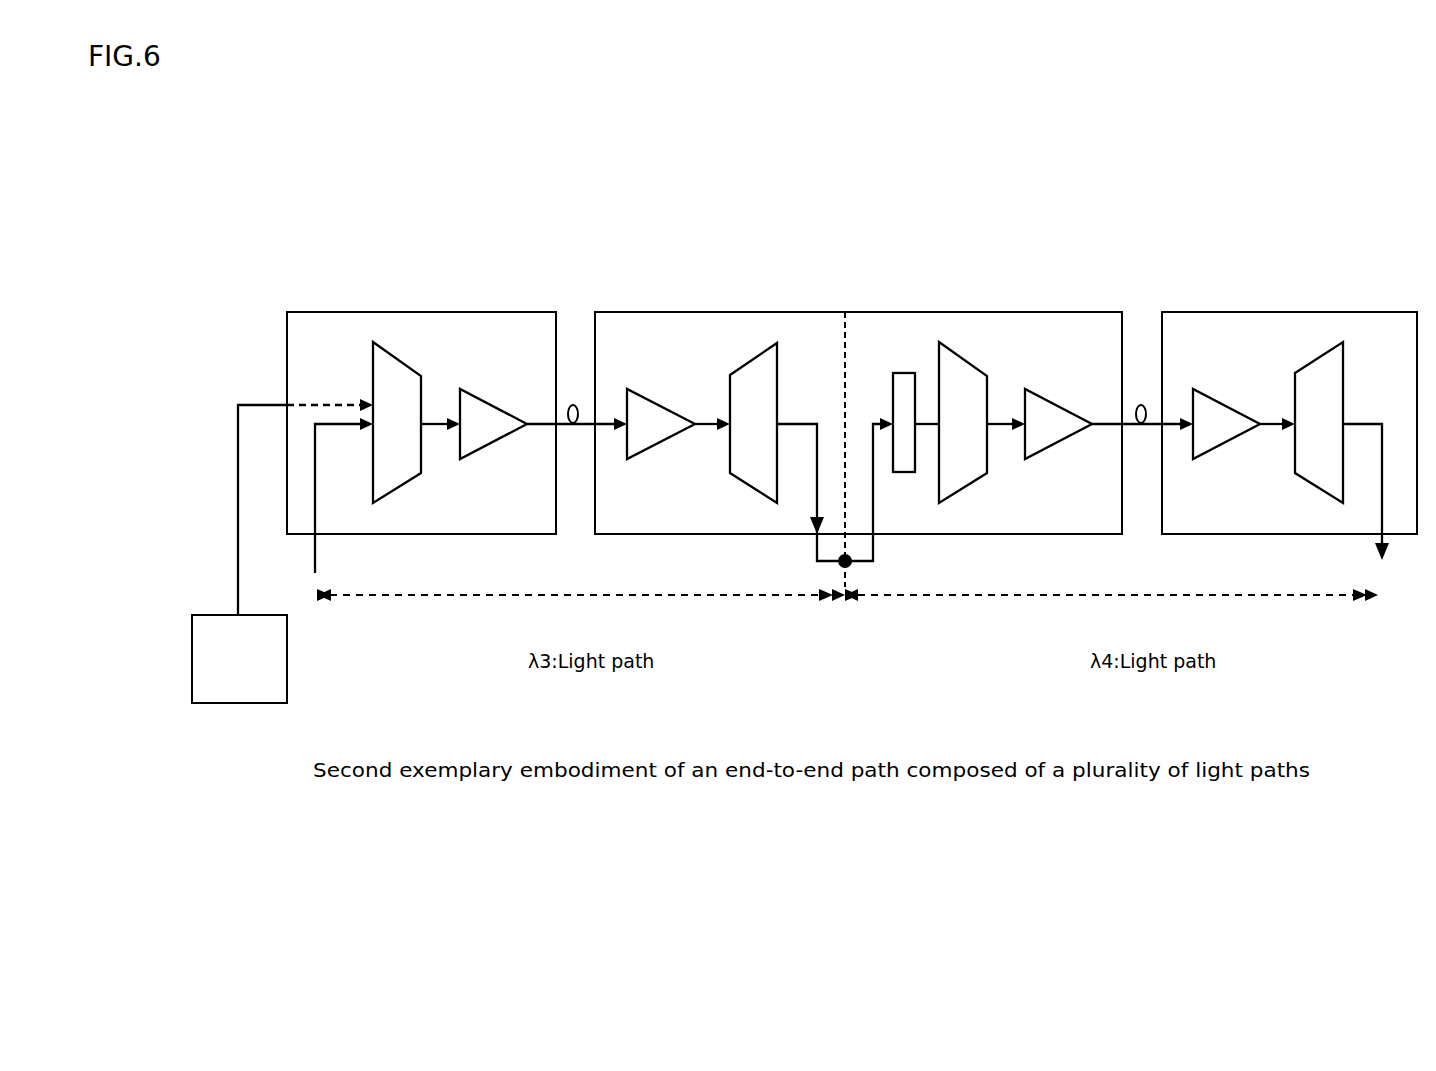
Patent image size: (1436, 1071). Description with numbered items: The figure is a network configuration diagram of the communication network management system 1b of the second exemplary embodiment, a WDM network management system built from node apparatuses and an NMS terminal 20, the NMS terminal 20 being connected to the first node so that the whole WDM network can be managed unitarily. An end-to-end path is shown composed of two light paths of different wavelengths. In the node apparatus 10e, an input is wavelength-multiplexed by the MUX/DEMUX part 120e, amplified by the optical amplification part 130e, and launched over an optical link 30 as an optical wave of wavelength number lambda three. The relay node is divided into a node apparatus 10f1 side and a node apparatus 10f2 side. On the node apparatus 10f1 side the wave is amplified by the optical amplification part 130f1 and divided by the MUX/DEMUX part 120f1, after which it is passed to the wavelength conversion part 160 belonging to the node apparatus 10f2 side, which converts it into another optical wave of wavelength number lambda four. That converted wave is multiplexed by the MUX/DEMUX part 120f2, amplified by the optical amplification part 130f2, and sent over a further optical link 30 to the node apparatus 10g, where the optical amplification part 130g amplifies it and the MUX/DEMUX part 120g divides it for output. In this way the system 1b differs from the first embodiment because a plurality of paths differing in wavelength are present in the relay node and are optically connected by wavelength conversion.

The communication network management system 1b is at (1232, 222).
The node apparatus 10e is at (348, 312).
The node apparatus (first side of relay node 10f) 10f1 is at (648, 312).
The node apparatus (second side of relay node 10f) 10f2 is at (1025, 312).
The node apparatus 10g is at (1208, 312).
The NMS terminal 20 is at (287, 648).
The optical link 30 is at (573, 404).
The MUX/DEMUX part 120e is at (414, 372).
The MUX/DEMUX part 120f1 is at (737, 370).
The MUX/DEMUX part 120f2 is at (980, 372).
The MUX/DEMUX part 120g is at (1300, 370).
The optical amplification part 130e is at (480, 448).
The optical amplification part 130f1 is at (650, 448).
The optical amplification part 130f2 is at (1045, 448).
The optical amplification part 130g is at (1215, 448).
The wavelength conversion part 160 is at (903, 373).